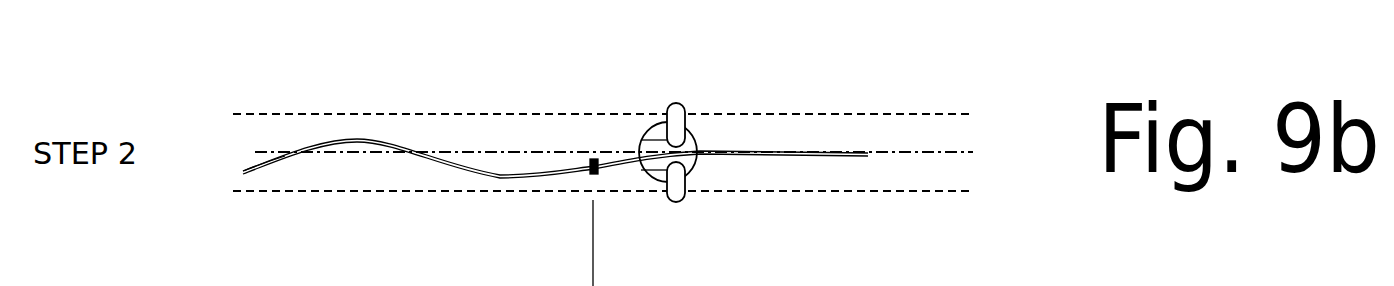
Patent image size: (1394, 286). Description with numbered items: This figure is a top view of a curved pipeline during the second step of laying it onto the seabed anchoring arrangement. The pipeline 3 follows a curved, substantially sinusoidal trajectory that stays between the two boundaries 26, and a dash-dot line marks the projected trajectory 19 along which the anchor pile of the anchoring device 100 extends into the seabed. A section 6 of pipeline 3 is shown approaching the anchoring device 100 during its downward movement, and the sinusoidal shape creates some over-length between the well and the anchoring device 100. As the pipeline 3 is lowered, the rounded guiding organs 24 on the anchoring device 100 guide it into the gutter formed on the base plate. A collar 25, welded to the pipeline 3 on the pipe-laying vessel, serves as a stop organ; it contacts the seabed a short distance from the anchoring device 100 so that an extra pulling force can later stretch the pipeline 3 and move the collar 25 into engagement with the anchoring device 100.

The boundaries 26 is at (409, 104).
The projected trajectory 19 is at (940, 142).
The pipeline 3 is at (453, 163).
The section of pipeline 6 is at (266, 178).
The anchoring device 100 is at (630, 97).
The guiding organs 24 is at (690, 101).
The collar 25 is at (586, 188).